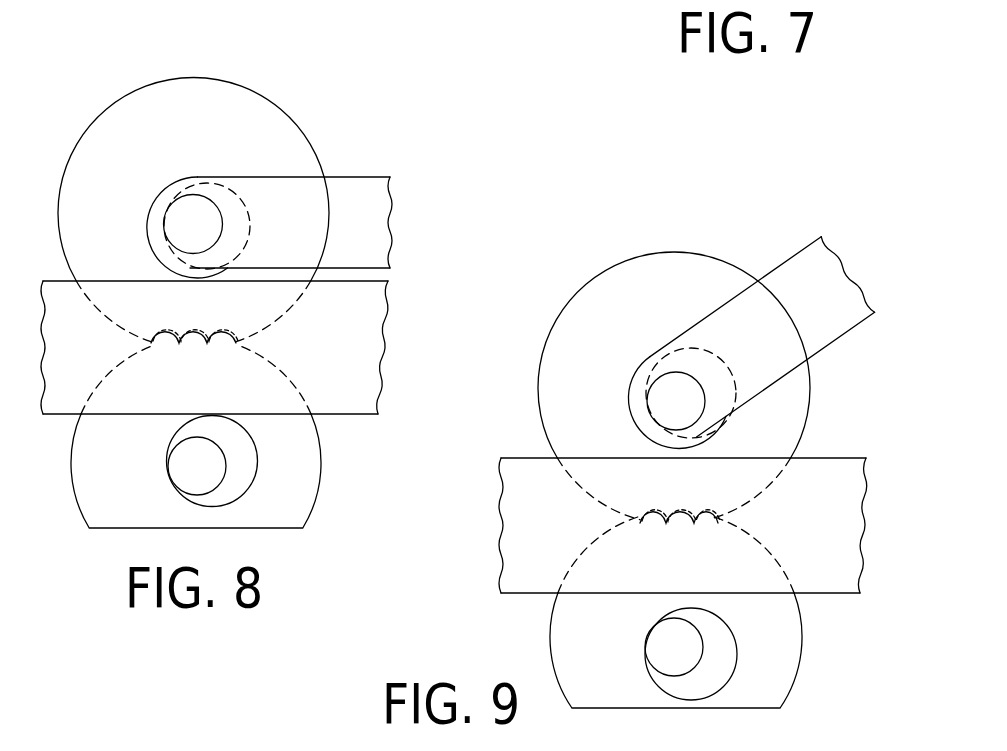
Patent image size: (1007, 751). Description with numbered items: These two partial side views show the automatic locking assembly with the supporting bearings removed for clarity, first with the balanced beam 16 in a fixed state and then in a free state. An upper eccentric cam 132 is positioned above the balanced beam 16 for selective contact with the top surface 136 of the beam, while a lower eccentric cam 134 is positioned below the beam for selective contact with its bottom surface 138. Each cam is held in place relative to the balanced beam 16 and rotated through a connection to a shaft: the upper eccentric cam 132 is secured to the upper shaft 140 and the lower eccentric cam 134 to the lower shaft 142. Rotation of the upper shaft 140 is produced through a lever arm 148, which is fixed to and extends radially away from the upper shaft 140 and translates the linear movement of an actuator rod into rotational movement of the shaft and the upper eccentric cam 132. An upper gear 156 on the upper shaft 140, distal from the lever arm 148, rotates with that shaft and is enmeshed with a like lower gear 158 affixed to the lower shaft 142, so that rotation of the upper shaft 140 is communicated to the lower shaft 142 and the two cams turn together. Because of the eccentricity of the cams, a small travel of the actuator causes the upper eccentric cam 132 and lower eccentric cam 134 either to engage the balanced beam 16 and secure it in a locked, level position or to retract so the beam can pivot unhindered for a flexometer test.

In FIG. 8, the balanced beam 16 is at (362, 343).
In FIG. 9, the balanced beam 16 is at (837, 565).
In FIG. 8, the upper eccentric cam 132 is at (255, 175).
In FIG. 9, the upper eccentric cam 132 is at (740, 402).
In FIG. 8, the lower eccentric cam 134 is at (220, 497).
In FIG. 9, the lower eccentric cam 134 is at (698, 683).
In FIG. 8, the top surface 136 is at (52, 280).
In FIG. 8, the bottom surface 138 is at (62, 414).
In FIG. 8, the upper shaft 140 is at (197, 208).
In FIG. 9, the upper shaft 140 is at (667, 392).
In FIG. 8, the lower shaft 142 is at (185, 477).
In FIG. 9, the lower shaft 142 is at (665, 637).
In FIG. 8, the lever arm 148 is at (368, 198).
In FIG. 9, the lever arm 148 is at (840, 323).
In FIG. 8, the upper gear 156 is at (162, 98).
In FIG. 9, the upper gear 156 is at (592, 308).
In FIG. 8, the lower gear 158 is at (300, 488).
In FIG. 9, the lower gear 158 is at (782, 683).